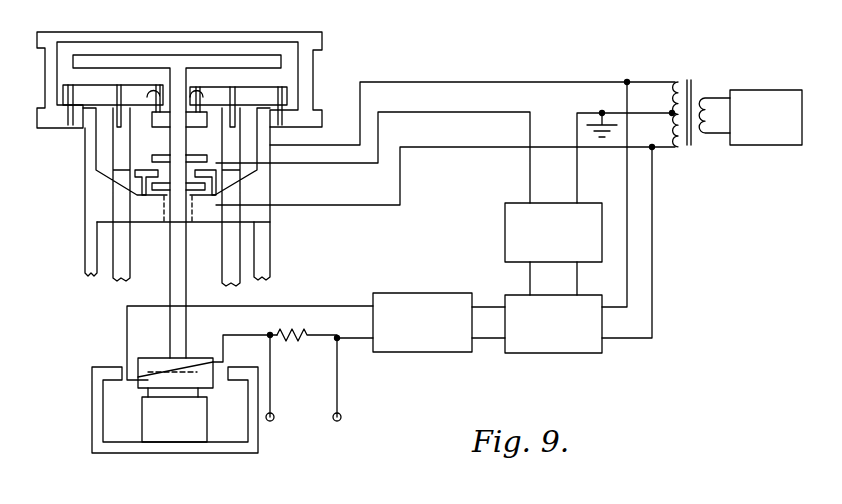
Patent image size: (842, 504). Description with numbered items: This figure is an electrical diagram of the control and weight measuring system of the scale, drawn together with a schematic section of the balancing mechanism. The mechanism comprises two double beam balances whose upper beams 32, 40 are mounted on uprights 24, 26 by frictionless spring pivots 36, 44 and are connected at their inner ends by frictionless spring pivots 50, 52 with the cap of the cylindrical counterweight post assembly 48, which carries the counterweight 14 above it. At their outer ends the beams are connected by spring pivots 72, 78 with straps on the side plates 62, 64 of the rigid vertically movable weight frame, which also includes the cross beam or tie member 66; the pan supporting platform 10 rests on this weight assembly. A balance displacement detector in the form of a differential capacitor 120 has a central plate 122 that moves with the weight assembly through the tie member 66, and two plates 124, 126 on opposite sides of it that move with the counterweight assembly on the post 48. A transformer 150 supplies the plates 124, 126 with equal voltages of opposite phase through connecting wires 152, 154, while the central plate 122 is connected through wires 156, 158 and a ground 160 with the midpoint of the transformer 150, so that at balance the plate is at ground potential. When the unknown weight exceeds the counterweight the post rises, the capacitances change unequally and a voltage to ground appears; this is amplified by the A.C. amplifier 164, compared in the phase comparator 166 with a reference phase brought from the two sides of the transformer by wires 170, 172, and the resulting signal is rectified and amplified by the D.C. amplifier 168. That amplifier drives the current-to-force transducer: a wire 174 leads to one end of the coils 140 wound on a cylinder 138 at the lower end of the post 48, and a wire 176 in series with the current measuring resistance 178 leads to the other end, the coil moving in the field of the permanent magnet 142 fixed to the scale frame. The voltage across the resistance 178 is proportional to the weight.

The pan supporting platform 10 is at (133, 33).
The counterweight 14 is at (251, 54).
The upper beam 32 is at (86, 86).
The frictionless spring pivot 36 is at (122, 91).
The frictionless spring pivot 50 is at (149, 84).
The frictionless spring pivot 52 is at (201, 96).
The frictionless spring pivot 44 is at (231, 96).
The upper beam 40 is at (262, 90).
The spring pivot 72 is at (65, 100).
The spring pivot 78 is at (283, 98).
The side plate 62 is at (84, 148).
The side plate 64 is at (271, 168).
The cross beam 66 is at (106, 197).
The capacitor plate 124 is at (197, 148).
The central plate 122 is at (208, 171).
The differential capacitor 120 is at (158, 193).
The capacitor plate 126 is at (192, 224).
The upright 26 is at (240, 270).
The upright 24 is at (118, 262).
The cylindrical counterweight post assembly 48 is at (170, 289).
The wire 174 is at (292, 302).
The cylinder 138 is at (153, 357).
The coils 140 is at (202, 360).
The wire 176 is at (236, 337).
The current measuring meter 178 is at (305, 347).
The permanent magnet 142 is at (175, 438).
The connecting wire 152 is at (472, 179).
The wire 156 is at (462, 112).
The connecting wire 154 is at (454, 229).
The wire 158 is at (600, 112).
The ground 160 is at (606, 140).
The transformer 150 is at (688, 77).
The A.C. amplifier 164 is at (505, 229).
The wire 170 is at (627, 275).
The wire 172 is at (655, 280).
The D.C. amplifier 168 is at (418, 353).
The phase comparator 166 is at (565, 354).